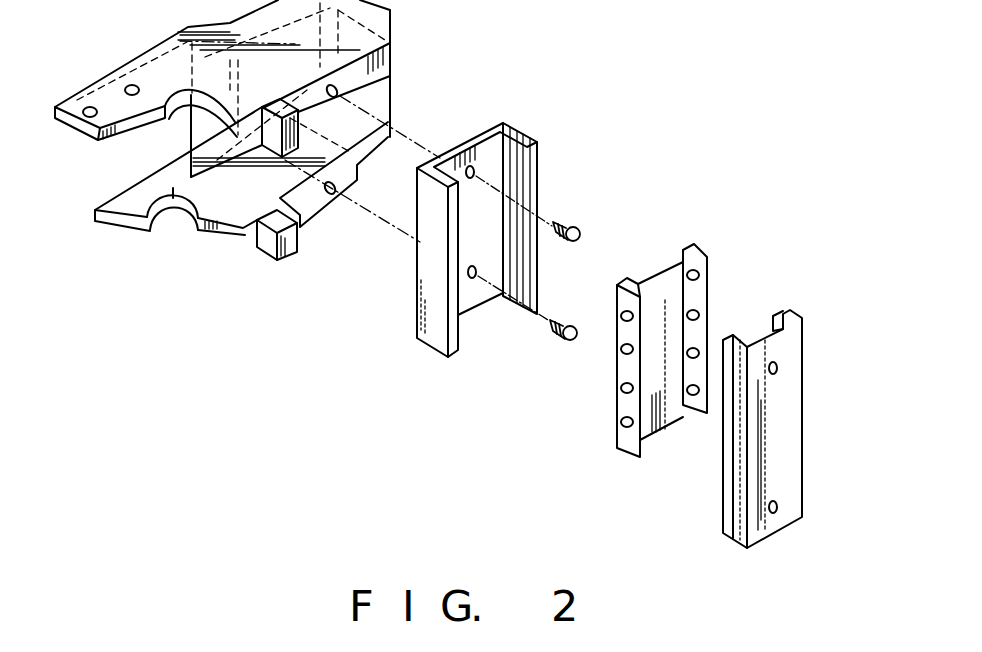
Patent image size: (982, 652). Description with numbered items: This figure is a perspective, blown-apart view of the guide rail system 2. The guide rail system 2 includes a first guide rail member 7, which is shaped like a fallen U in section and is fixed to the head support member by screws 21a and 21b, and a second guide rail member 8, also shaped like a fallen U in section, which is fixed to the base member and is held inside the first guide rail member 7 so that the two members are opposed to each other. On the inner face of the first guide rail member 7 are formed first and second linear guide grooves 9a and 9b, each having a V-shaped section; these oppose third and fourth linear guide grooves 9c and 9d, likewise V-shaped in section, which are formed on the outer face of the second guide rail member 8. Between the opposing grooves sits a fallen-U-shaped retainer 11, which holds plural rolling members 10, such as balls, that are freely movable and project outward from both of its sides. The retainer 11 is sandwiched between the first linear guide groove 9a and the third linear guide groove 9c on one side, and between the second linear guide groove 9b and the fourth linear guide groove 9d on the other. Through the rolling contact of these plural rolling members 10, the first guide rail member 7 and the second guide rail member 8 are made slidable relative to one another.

The guide rail system 2 is at (653, 155).
The first guide rail member 7 is at (482, 135).
The first linear guide groove 9a is at (513, 133).
The second linear guide groove 9b is at (442, 188).
The screw 21a is at (572, 212).
The screw 21b is at (552, 340).
The retainer 11 is at (690, 248).
The rolling members 10 is at (618, 425).
The second guide rail member 8 is at (803, 431).
The third linear guide groove 9c is at (788, 312).
The fourth linear guide groove 9d is at (728, 468).